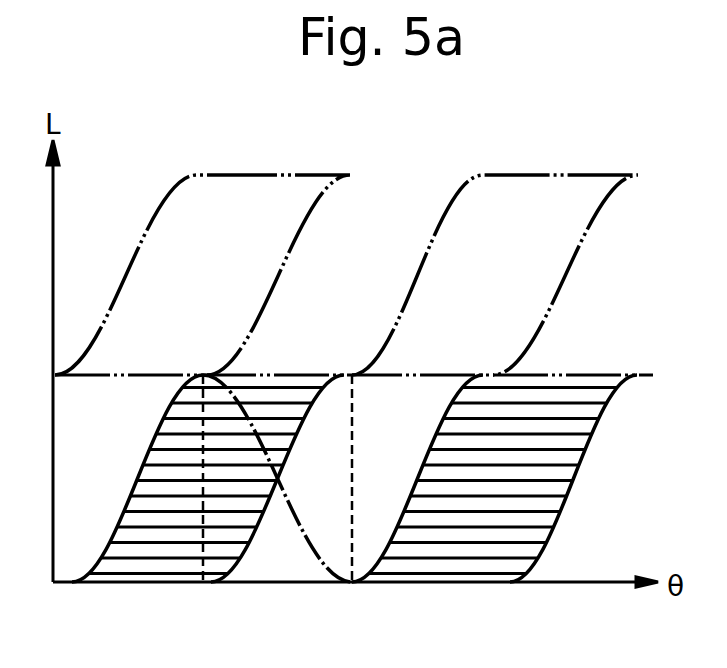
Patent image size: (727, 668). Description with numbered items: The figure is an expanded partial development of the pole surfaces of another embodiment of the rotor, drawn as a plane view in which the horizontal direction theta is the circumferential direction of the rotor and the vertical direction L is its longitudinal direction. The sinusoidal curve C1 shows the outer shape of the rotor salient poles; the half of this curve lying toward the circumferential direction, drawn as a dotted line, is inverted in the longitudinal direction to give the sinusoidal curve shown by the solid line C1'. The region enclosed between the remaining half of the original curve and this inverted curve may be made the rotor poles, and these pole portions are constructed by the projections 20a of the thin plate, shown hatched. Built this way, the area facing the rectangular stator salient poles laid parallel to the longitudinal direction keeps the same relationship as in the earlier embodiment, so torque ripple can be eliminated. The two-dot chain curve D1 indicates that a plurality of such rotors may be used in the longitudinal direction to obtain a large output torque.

The two-dot chain curve D1 is at (165, 208).
The inverted sinusoidal curve C1' is at (277, 509).
The sinusoidal curve C1 is at (277, 509).
The projections of the thin plate 20a is at (570, 487).